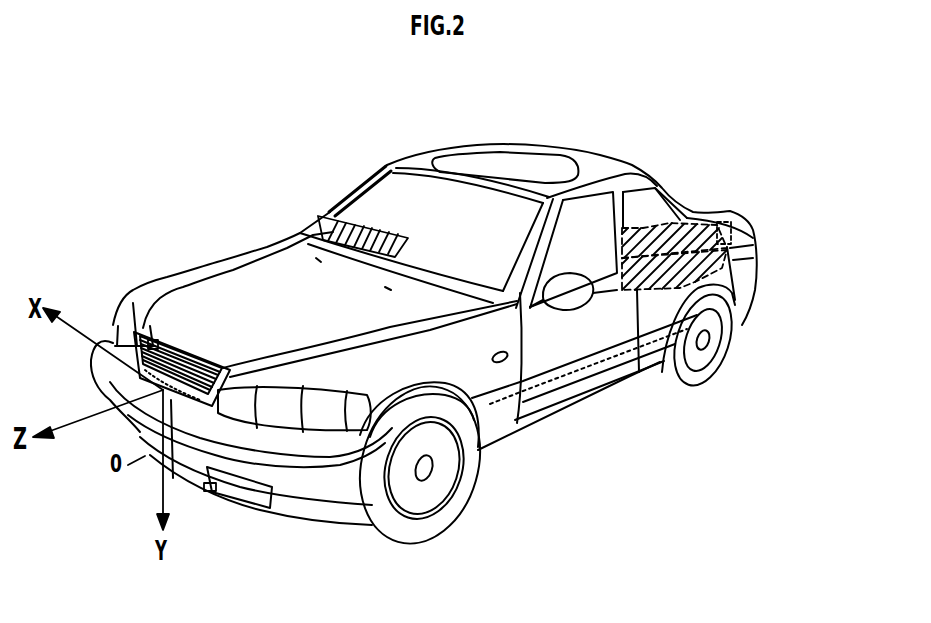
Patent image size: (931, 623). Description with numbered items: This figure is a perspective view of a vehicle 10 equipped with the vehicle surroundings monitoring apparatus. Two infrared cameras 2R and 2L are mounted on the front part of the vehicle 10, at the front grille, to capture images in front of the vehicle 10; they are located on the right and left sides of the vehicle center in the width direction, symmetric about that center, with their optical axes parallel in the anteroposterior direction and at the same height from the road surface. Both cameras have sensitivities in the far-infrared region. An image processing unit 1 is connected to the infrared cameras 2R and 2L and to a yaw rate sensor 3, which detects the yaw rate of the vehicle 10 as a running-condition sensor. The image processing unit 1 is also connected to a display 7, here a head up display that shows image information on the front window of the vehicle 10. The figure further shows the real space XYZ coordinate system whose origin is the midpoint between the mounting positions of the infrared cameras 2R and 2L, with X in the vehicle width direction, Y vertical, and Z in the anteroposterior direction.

The vehicle 10 is at (520, 143).
The display 7 is at (326, 213).
The infrared camera 2R is at (155, 350).
The infrared camera 2L is at (210, 491).
The yaw rate sensor 3 is at (724, 222).
The image processing unit 1 is at (737, 268).